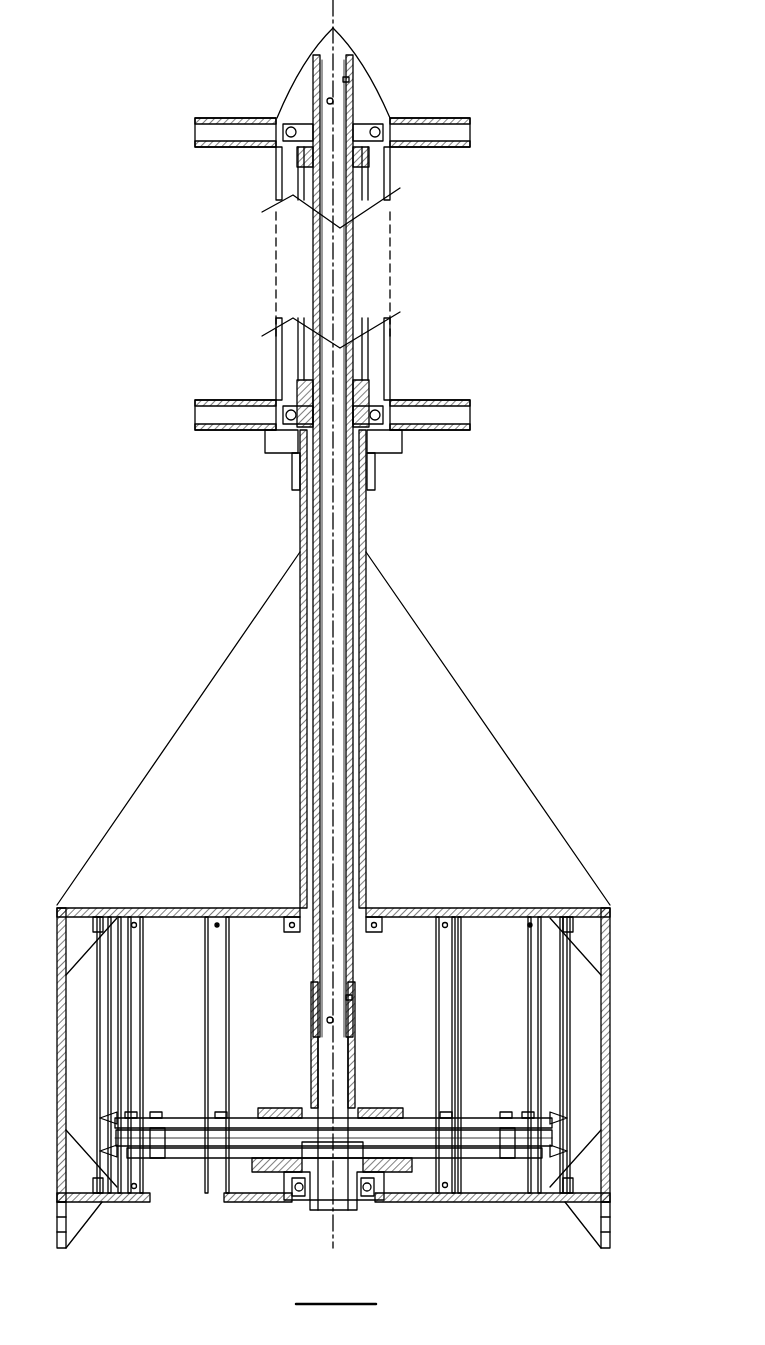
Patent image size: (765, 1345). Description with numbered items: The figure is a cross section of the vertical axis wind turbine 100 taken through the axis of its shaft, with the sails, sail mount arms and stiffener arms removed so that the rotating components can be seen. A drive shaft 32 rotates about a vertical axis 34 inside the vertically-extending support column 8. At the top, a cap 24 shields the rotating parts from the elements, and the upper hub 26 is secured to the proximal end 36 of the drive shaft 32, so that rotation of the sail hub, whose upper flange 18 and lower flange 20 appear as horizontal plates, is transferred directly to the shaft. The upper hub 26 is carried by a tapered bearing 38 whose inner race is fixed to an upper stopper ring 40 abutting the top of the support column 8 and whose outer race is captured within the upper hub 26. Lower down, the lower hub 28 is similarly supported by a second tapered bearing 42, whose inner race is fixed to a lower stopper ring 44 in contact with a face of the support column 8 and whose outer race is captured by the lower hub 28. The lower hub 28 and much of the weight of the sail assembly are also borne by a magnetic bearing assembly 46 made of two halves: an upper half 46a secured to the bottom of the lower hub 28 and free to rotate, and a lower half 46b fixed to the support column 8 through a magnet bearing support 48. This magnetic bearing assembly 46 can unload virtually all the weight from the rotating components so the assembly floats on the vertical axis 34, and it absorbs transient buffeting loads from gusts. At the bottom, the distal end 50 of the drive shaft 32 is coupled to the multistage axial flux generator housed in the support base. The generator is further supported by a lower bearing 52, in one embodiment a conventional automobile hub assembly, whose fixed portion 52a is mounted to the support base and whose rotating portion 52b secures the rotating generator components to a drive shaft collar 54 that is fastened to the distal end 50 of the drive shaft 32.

The vertical axis wind turbine 100 is at (110, 160).
The support column 8 is at (303, 779).
The upper flange 18 is at (341, 132).
The lower flange 20 is at (205, 400).
The cap 24 is at (298, 65).
The upper hub 26 is at (445, 118).
The lower hub 28 is at (326, 411).
The drive shaft 32 is at (276, 182).
The vertical axis 34 is at (335, 9).
The proximal end 36 is at (352, 95).
The tapered bearing 38 is at (303, 130).
The upper stopper ring 40 is at (366, 163).
The second tapered bearing 42 is at (362, 417).
The lower stopper ring 44 is at (362, 390).
The magnetic bearing assembly 46 is at (280, 465).
The upper half 46a is at (267, 438).
The lower half 46b is at (387, 447).
The magnet bearing support 48 is at (368, 488).
The distal end 50 is at (355, 974).
The drive shaft collar 54 is at (356, 1081).
The lower bearing 52 is at (290, 1205).
The fixed portion 52a is at (370, 1201).
The rotating portion 52b is at (273, 1169).